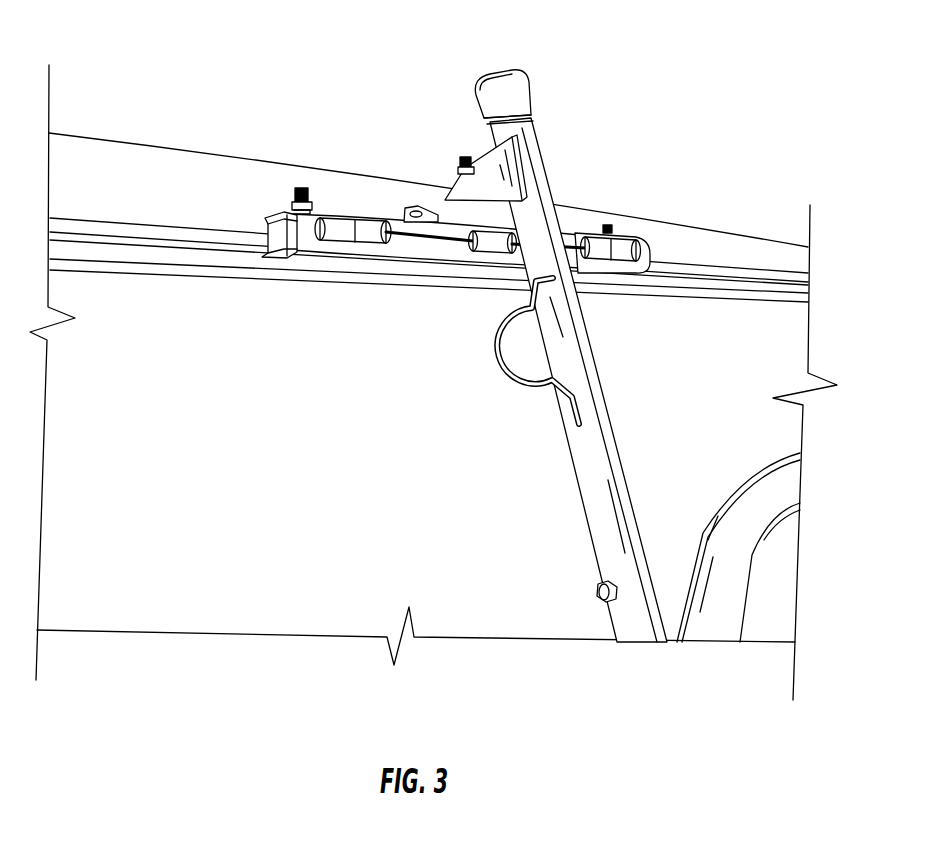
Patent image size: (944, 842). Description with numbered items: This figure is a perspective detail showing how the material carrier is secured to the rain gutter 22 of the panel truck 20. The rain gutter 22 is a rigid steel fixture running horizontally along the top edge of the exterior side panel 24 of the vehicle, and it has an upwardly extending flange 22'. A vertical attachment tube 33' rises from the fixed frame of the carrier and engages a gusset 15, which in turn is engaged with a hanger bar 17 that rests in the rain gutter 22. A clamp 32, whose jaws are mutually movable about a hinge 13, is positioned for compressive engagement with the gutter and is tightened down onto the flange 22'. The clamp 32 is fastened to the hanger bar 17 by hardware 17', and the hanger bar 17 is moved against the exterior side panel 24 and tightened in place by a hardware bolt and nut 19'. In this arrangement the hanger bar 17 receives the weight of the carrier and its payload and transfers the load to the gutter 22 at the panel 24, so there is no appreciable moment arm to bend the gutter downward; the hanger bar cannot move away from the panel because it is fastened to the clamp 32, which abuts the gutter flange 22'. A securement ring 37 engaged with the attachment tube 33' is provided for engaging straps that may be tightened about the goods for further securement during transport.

The hinge 13 is at (407, 250).
The gusset 15 is at (497, 186).
The hanger bar 17 is at (415, 172).
The hardware 17' is at (517, 189).
The nut 19' is at (447, 126).
The panel truck 20 is at (85, 155).
The rain gutter 22 is at (448, 229).
The upwardly extending flange 22' is at (429, 229).
The exterior side panel 24 is at (698, 414).
The clamp 32 is at (289, 210).
The vertical attachment tube 33' is at (571, 356).
The securement ring 37 is at (512, 345).